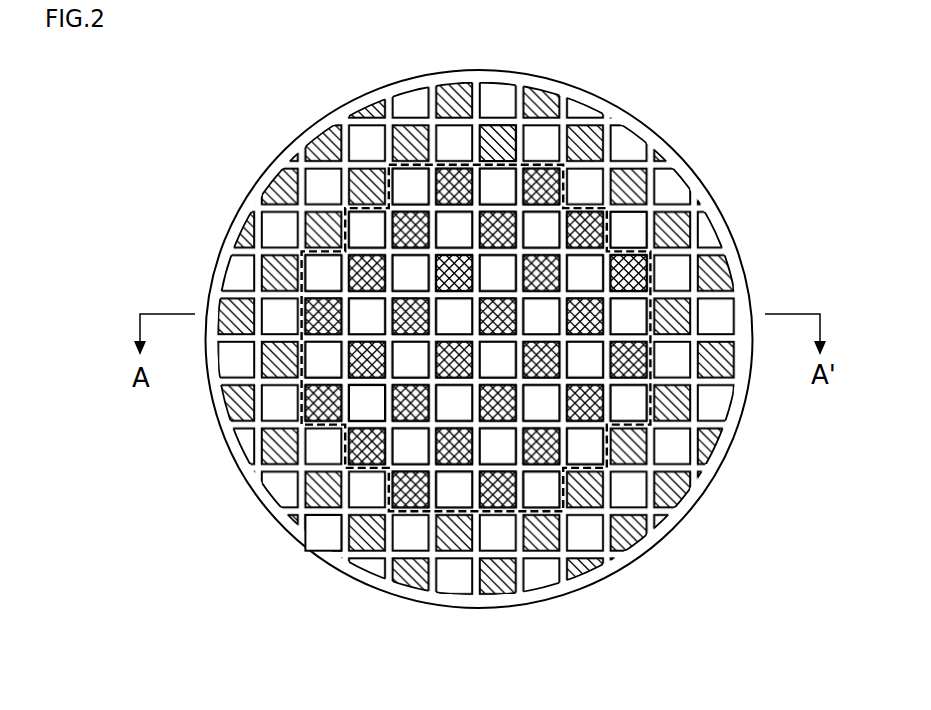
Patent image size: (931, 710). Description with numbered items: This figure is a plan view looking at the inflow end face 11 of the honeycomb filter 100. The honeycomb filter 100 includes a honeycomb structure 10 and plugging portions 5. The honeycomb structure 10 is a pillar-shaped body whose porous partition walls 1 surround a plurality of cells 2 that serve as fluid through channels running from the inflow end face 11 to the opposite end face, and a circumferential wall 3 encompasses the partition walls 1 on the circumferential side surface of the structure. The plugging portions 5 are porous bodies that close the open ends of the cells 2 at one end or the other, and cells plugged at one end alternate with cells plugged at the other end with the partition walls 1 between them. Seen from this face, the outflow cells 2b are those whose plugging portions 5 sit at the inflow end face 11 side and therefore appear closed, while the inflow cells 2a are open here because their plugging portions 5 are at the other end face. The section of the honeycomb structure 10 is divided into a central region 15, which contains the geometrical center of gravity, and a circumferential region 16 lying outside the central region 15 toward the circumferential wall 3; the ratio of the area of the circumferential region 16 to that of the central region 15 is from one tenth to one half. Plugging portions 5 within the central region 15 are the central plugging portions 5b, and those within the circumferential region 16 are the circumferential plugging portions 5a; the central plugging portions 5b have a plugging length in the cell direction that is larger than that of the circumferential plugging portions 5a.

The honeycomb filter 100 is at (822, 38).
The honeycomb structure 10 is at (502, 316).
The inflow end face 11 is at (280, 124).
The partition walls 1 is at (590, 167).
The cells 2 is at (721, 207).
The inflow cells 2a is at (628, 228).
The outflow cells 2b is at (627, 272).
The circumferential wall 3 is at (693, 508).
The plugging portions 5 is at (476, 267).
The circumferential plugging portions 5a is at (497, 148).
The central plugging portions 5b is at (433, 257).
The central region 15 is at (357, 402).
The circumferential region 16 is at (327, 521).